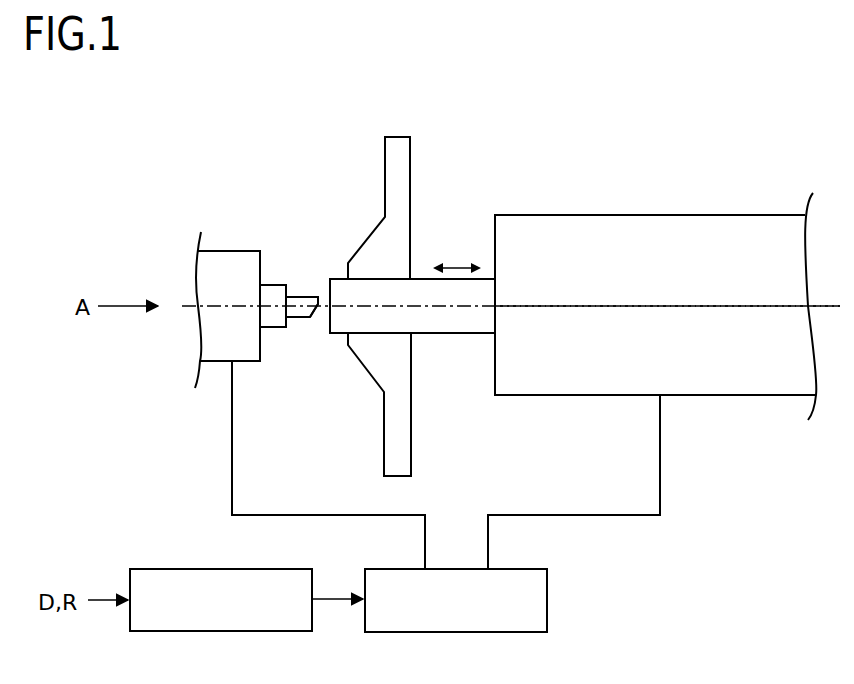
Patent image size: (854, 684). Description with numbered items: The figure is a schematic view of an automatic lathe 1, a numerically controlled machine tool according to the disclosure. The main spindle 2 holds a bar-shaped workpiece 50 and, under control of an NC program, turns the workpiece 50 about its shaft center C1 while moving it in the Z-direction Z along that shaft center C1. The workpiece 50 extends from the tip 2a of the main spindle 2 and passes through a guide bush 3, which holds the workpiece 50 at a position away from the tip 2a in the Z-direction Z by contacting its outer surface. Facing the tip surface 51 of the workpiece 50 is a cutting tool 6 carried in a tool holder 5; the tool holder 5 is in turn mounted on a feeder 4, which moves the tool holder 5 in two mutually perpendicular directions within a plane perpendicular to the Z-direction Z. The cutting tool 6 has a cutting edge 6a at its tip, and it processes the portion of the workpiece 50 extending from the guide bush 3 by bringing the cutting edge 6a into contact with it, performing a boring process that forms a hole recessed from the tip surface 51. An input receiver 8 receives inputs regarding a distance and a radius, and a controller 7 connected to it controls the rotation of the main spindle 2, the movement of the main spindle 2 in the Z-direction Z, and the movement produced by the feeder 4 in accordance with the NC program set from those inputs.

The automatic lathe 1 is at (746, 151).
The main spindle 2 is at (659, 240).
The tip of the main spindle 2a is at (495, 361).
The guide bush 3 is at (397, 136).
The feeder 4 is at (230, 249).
The tool holder 5 is at (275, 283).
The cutting tool 6 is at (297, 310).
The cutting edge 6a is at (322, 292).
The controller 7 is at (550, 598).
The input receiver 8 is at (172, 569).
The workpiece 50 is at (418, 292).
The tip surface 51 is at (330, 322).
The shaft center C1 is at (683, 307).
The Z-direction Z is at (456, 267).